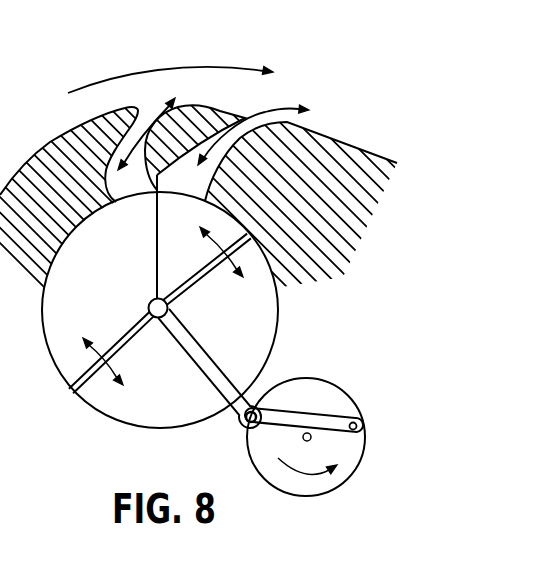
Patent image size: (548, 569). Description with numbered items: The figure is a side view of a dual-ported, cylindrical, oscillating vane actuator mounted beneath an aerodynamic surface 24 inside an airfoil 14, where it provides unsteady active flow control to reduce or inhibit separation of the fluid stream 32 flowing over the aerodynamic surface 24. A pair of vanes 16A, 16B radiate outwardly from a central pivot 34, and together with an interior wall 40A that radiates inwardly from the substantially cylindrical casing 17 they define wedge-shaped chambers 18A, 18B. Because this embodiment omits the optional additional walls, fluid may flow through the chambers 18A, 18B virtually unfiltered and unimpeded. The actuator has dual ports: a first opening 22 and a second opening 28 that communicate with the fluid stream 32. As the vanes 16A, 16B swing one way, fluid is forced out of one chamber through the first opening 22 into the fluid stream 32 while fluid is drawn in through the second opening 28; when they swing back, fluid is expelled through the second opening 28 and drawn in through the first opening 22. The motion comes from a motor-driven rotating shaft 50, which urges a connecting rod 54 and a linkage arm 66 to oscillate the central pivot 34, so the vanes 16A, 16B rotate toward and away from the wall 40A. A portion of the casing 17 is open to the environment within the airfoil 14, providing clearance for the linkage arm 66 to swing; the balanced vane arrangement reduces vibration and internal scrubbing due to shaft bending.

The airfoil 14 is at (341, 325).
The vane 16A is at (130, 333).
The vane 16B is at (204, 279).
The casing 17 is at (277, 332).
The chamber 18A is at (134, 241).
The chamber 18B is at (199, 258).
The first opening 22 is at (150, 112).
The aerodynamic surface 24 is at (15, 172).
The second opening 28 is at (255, 110).
The fluid stream 32 is at (158, 86).
The central pivot 34 is at (150, 301).
The interior wall 40A is at (175, 204).
The rotating shaft 50 is at (352, 473).
The connecting rod 54 is at (325, 413).
The linkage arm 66 is at (193, 360).